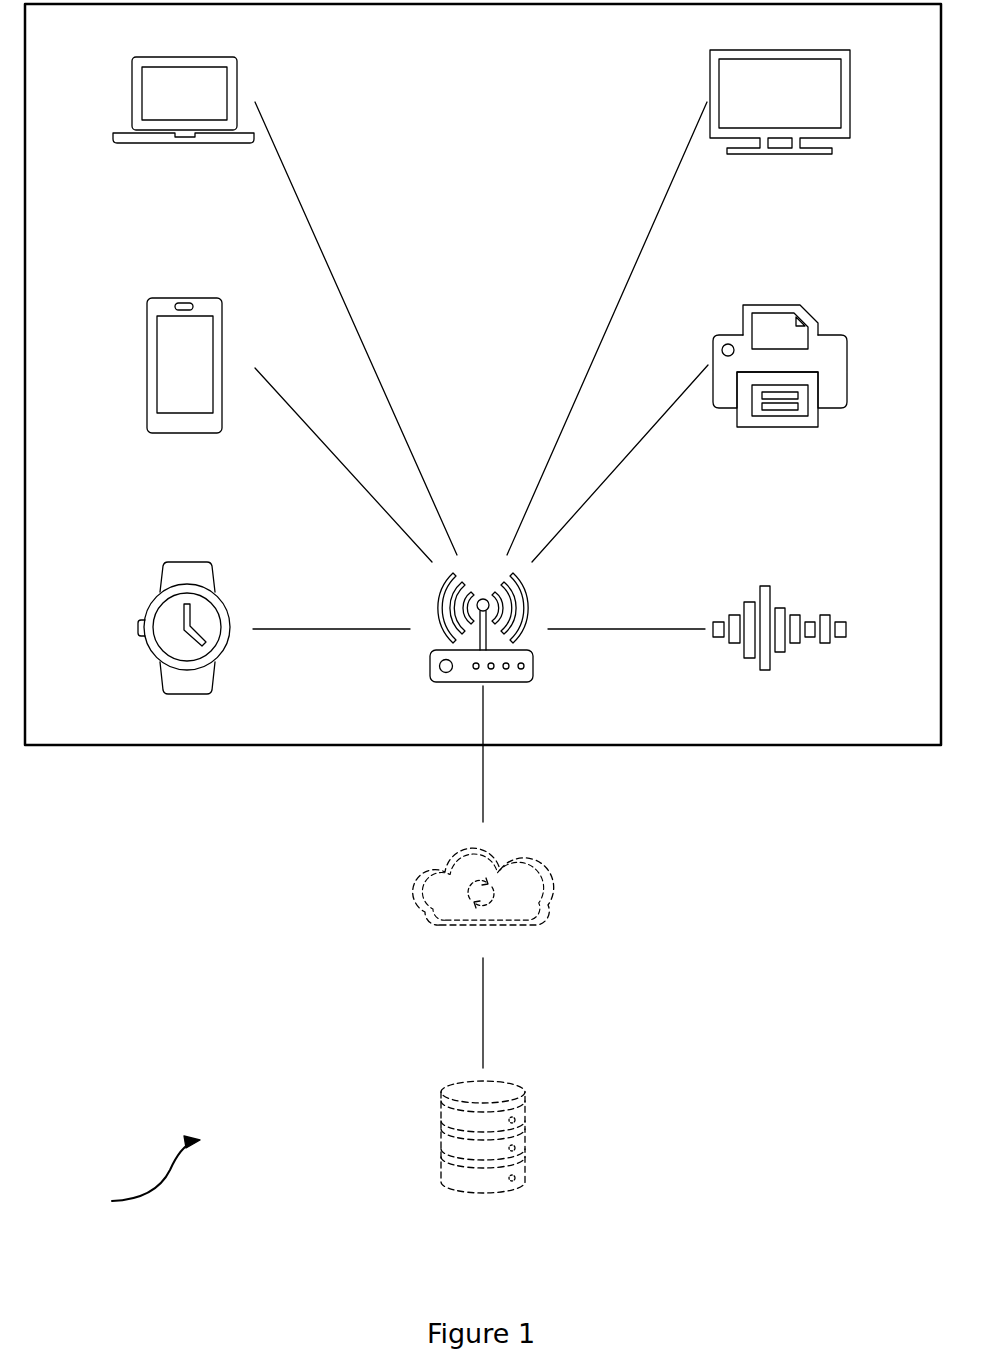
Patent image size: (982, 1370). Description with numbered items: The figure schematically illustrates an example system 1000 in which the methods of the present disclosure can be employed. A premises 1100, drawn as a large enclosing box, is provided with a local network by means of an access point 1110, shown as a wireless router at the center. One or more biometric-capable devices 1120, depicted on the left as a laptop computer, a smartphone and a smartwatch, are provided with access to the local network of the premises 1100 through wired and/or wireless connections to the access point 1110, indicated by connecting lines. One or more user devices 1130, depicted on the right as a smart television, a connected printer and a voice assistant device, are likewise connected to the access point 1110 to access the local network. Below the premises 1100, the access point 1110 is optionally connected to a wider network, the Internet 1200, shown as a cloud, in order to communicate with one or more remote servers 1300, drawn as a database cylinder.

The system 1000 is at (122, 1175).
The premises 1100 is at (483, 374).
The access point 1110 is at (481, 640).
The biometric-capable devices 1120 is at (183, 389).
The user devices 1130 is at (780, 374).
The Internet 1200 is at (483, 902).
The remote servers 1300 is at (483, 1153).